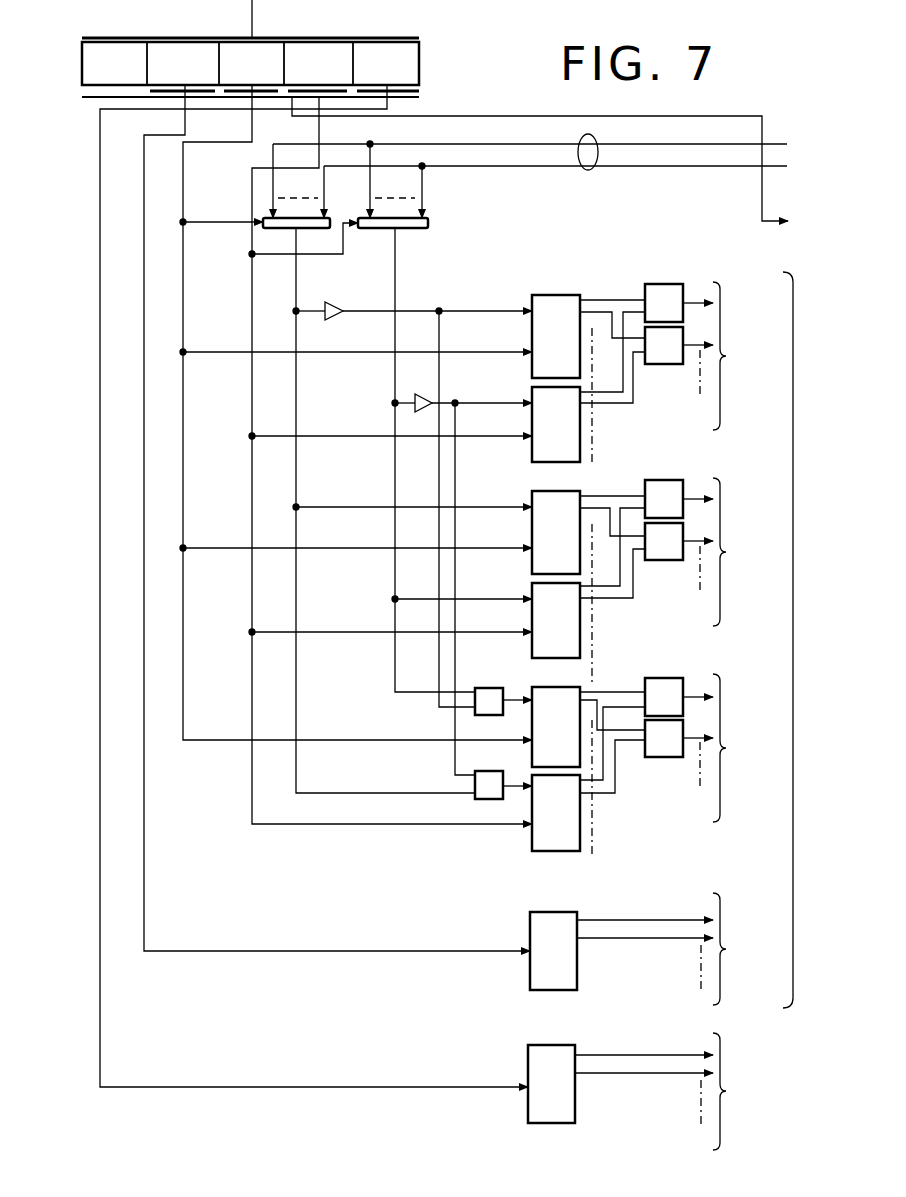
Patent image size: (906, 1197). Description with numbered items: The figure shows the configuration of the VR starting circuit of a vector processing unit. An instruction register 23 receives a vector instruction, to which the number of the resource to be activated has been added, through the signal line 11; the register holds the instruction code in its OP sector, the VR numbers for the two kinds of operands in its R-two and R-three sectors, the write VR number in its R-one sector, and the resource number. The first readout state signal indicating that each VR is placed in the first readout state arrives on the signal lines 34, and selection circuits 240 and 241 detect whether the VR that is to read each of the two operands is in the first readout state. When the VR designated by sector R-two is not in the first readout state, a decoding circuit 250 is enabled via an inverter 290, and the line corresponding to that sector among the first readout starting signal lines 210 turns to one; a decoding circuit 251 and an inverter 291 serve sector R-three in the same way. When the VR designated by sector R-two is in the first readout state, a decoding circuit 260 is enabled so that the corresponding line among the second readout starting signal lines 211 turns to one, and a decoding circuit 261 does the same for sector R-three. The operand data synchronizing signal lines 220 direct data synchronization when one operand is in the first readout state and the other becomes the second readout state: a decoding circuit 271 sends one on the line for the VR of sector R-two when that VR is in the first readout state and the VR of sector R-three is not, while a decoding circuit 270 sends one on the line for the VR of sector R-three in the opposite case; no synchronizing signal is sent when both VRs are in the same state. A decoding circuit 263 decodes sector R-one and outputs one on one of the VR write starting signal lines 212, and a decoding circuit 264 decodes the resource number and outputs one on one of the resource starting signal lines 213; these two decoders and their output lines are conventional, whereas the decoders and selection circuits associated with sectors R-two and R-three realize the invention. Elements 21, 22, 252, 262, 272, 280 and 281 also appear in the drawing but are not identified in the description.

The signal line 11 is at (250, 8).
The instruction register 23 is at (419, 63).
The bus lines 21 is at (775, 221).
The signal lines 34 is at (590, 170).
The control section 22 is at (793, 605).
The selection circuit 240 is at (268, 218).
The selection circuit 241 is at (428, 218).
The inverter 290 is at (366, 284).
The inverter 291 is at (416, 398).
The decoding circuit 250 is at (533, 298).
The decoding circuit 251 is at (533, 392).
The OR gates 252 is at (665, 284).
The decoding circuit 260 is at (533, 494).
The decoding circuit 261 is at (533, 588).
The OR gates 262 is at (665, 480).
The decoding circuit 270 is at (533, 688).
The decoding circuit 271 is at (533, 852).
The OR gates 272 is at (665, 678).
The AND gate 280 is at (475, 712).
The AND gate 281 is at (475, 786).
The first readout starting signal lines 210 is at (750, 356).
The second readout starting signal lines 211 is at (750, 552).
The operand data synchronizing signal lines 220 is at (750, 748).
The VR write starting signal lines 212 is at (750, 949).
The resource starting signal lines 213 is at (750, 1091).
The decoding circuit 263 is at (530, 990).
The decoding circuit 264 is at (528, 1123).